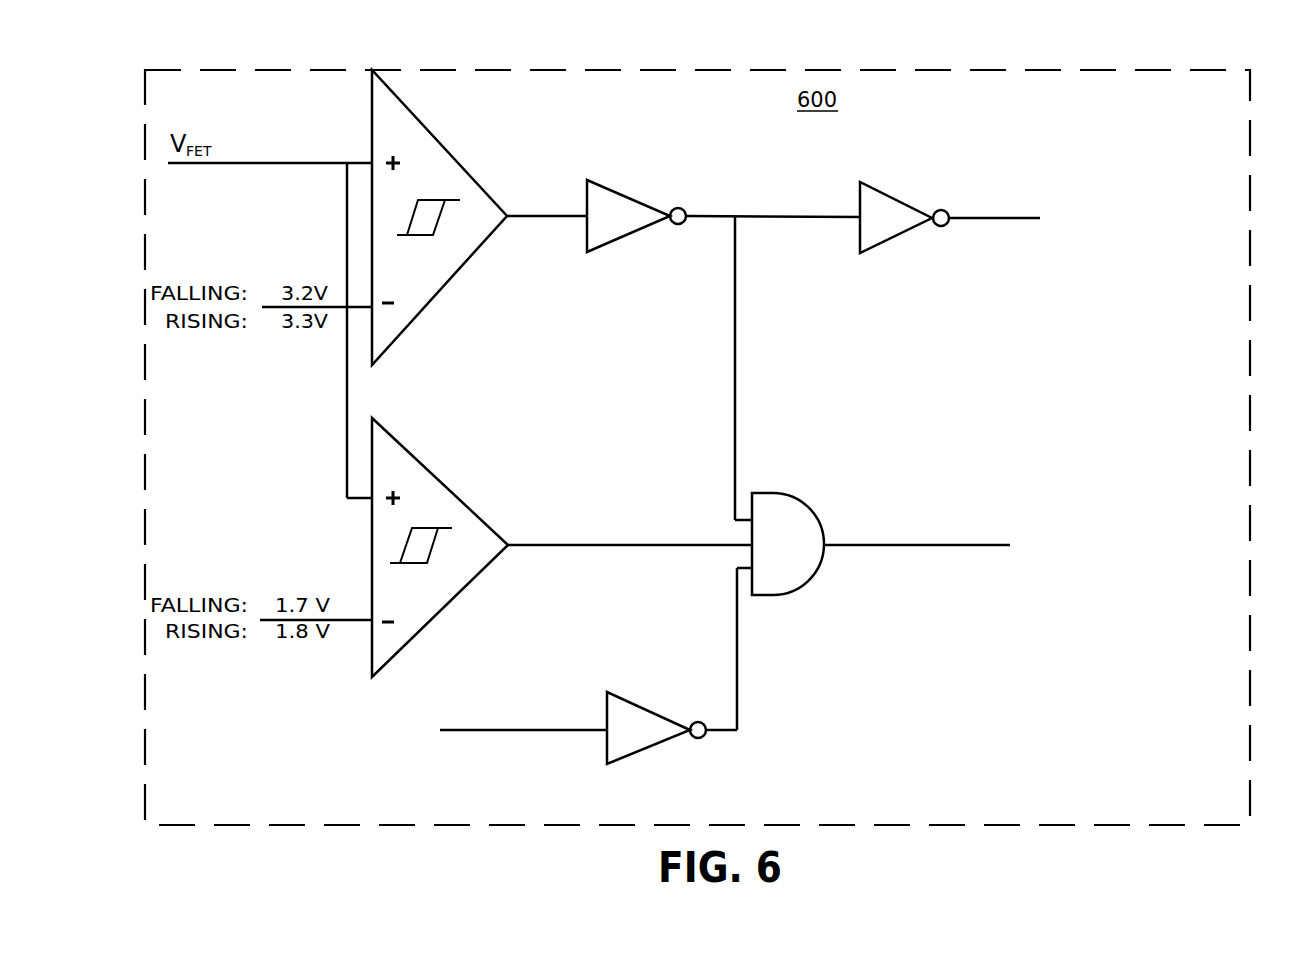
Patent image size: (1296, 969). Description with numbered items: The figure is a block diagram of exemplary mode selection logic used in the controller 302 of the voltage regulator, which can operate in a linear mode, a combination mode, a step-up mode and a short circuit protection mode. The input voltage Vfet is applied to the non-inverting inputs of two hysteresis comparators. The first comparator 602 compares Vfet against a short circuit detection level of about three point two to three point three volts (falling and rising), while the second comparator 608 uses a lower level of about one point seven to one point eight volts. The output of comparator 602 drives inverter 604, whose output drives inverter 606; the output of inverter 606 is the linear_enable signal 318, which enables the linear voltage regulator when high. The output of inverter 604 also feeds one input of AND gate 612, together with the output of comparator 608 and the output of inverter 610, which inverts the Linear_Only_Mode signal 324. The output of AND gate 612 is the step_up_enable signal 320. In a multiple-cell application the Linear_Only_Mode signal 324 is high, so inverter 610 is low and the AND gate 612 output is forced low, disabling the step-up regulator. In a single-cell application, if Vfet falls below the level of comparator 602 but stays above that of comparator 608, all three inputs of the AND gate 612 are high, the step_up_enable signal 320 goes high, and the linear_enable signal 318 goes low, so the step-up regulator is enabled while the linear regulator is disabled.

The controller 302 is at (1080, 70).
The comparator 602 is at (450, 150).
The inverter 604 is at (615, 188).
The inverter 606 is at (882, 187).
The comparator 608 is at (433, 473).
The inverter 610 is at (635, 755).
The AND gate 612 is at (805, 508).
The linear_enable signal 318 is at (990, 218).
The step_up_enable signal 320 is at (948, 545).
The Linear_Only_Mode signal 324 is at (455, 730).